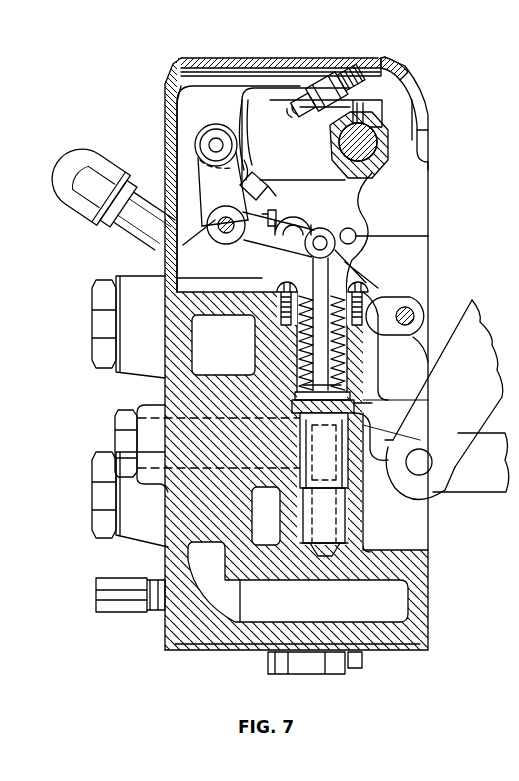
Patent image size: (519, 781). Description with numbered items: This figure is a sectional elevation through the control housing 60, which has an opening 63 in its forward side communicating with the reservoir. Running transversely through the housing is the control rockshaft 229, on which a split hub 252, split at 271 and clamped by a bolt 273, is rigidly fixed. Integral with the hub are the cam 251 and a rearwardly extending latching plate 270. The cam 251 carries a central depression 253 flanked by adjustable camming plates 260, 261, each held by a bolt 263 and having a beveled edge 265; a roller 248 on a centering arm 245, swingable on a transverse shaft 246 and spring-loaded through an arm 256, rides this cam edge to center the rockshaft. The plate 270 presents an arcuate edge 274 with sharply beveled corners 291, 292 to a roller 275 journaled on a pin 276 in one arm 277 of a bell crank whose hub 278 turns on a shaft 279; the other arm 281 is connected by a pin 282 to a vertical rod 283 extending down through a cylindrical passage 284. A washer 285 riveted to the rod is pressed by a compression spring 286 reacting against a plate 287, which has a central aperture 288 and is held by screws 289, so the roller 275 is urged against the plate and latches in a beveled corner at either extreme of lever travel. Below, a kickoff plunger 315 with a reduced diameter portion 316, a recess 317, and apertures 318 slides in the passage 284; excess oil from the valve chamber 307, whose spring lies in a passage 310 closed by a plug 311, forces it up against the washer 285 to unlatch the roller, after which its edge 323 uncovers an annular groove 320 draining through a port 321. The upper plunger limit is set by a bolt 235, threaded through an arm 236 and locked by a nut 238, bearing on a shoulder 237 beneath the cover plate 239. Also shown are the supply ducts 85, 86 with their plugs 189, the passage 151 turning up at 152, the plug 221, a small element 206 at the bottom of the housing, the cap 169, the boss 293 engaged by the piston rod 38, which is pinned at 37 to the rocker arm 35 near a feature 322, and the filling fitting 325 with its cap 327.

The rocker arm 35 is at (488, 334).
The pin 37 is at (432, 462).
The piston rod 38 is at (487, 492).
The control housing 60 is at (170, 100).
The opening 63 is at (428, 163).
The cylinder supply duct 85 is at (190, 343).
The cylinder supply duct 86 is at (278, 530).
The passage 151 is at (336, 613).
The passage 152 is at (200, 548).
The cap 169 is at (104, 598).
The plug 189 is at (98, 316).
The plug 206 is at (363, 664).
The plug 221 is at (304, 674).
The control rockshaft 229 is at (365, 160).
The bolt 235 is at (305, 96).
The arm 236 is at (322, 80).
The shoulder 237 is at (378, 68).
The lock nut 238 is at (340, 74).
The cover plate 239 is at (214, 58).
The centering arm 245 is at (395, 346).
The transverse shaft 246 is at (405, 316).
The roller 248 is at (276, 212).
The cam 251 is at (355, 224).
The hub 252 is at (419, 140).
The depression 253 is at (302, 222).
The arm 256 is at (235, 288).
The camming plate 260 is at (258, 183).
The camming plate 261 is at (356, 258).
The bolt 263 is at (357, 236).
The beveled edge 265 is at (256, 250).
The latching plate 270 is at (322, 161).
The split 271 is at (353, 110).
The bolt 273 is at (412, 104).
The arcuate edge 274 is at (226, 130).
The roller 275 is at (205, 126).
The pin 276 is at (209, 145).
The arm 277 is at (203, 192).
The hub 278 is at (212, 240).
The shaft 279 is at (183, 246).
The arm 281 is at (304, 250).
The pin 282 is at (408, 237).
The rod 283 is at (318, 270).
The cylindrical passage 284 is at (348, 370).
The washer 285 is at (345, 384).
The compression spring 286 is at (300, 352).
The plate 287 is at (335, 292).
The central aperture 288 is at (300, 296).
The screws 289 is at (372, 300).
The beveled corner 291 is at (244, 120).
The beveled corner 292 is at (246, 176).
The boss 293 is at (350, 495).
The valve chamber 307 is at (420, 473).
The cylindrical passage 310 is at (166, 400).
The plug 311 is at (118, 432).
The kickoff plunger 315 is at (348, 532).
The reduced diameter portion 316 is at (370, 432).
The recess 317 is at (338, 512).
The apertures 318 is at (300, 492).
The annular groove 320 is at (356, 408).
The port 321 is at (372, 404).
The arm 322 is at (442, 455).
The edge 323 is at (218, 443).
The fitting 325 is at (118, 228).
The cap 327 is at (72, 142).